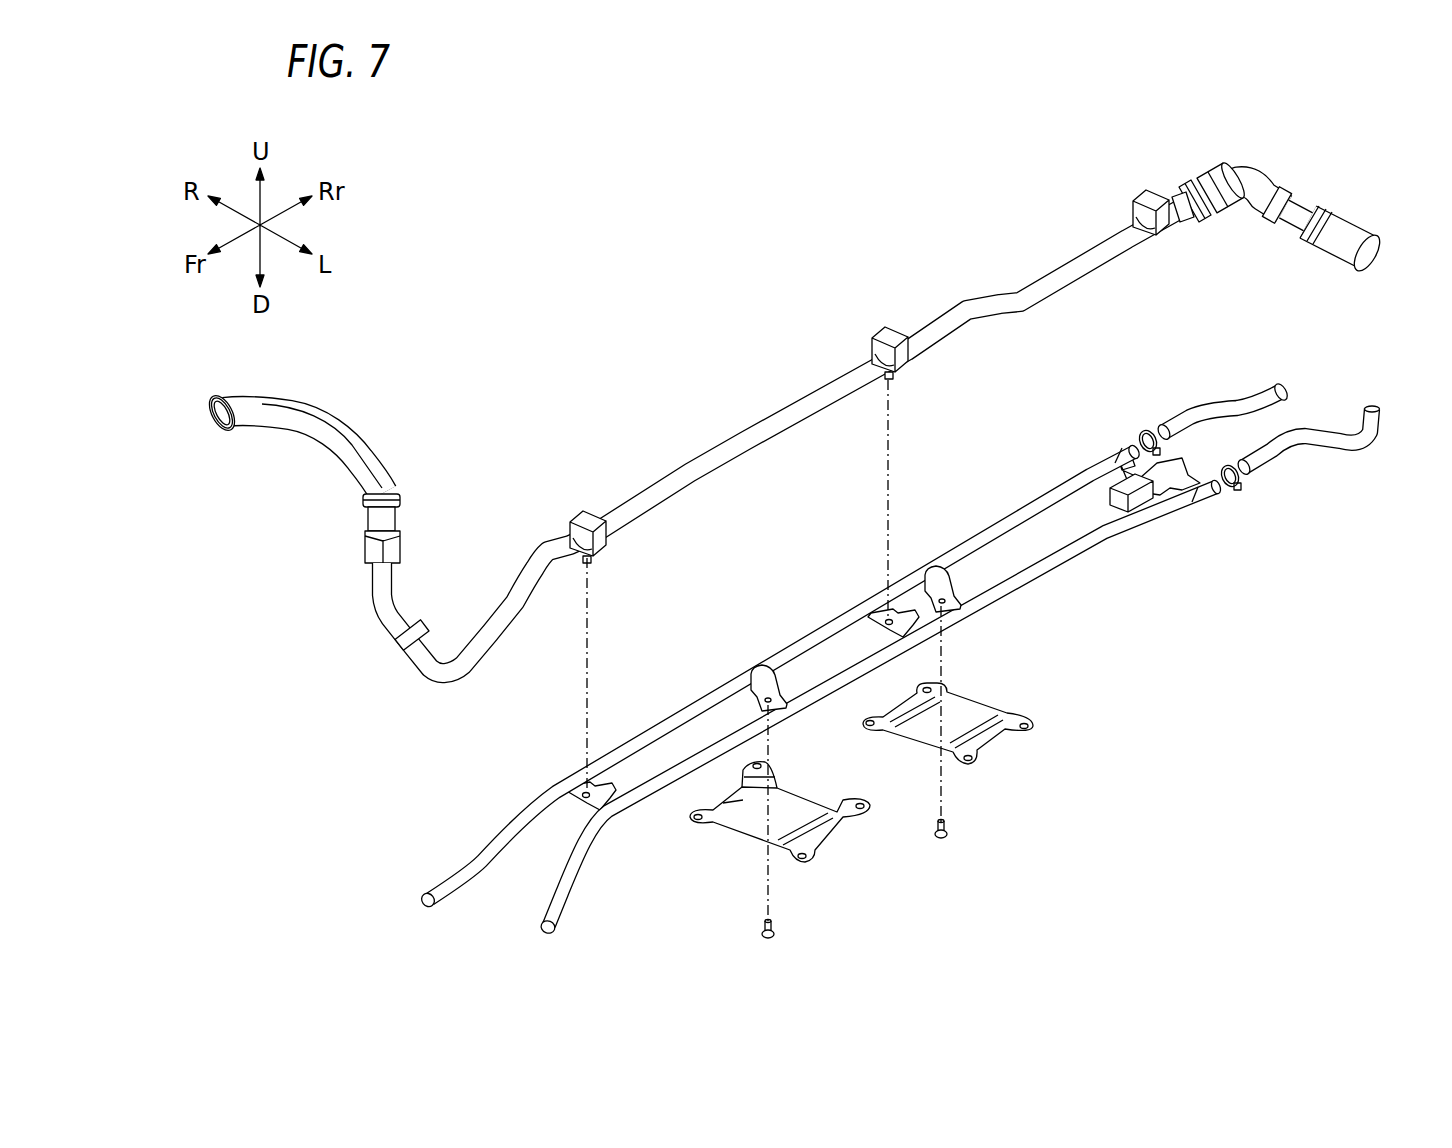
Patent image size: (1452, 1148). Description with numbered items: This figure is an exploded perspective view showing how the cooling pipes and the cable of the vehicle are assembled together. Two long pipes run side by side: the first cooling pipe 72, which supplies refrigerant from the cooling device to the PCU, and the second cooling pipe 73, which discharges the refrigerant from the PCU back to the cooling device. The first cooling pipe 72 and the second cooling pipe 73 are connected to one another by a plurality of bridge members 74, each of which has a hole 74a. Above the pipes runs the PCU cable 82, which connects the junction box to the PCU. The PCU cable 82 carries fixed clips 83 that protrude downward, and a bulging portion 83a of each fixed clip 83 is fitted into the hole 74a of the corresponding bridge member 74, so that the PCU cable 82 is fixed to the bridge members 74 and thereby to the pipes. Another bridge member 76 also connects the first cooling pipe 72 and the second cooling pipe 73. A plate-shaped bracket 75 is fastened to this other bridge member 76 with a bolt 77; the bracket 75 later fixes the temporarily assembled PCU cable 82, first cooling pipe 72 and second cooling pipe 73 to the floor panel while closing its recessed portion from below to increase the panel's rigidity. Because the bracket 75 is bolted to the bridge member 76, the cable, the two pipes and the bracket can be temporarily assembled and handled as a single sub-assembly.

The first cooling pipe 72 is at (1086, 549).
The second cooling pipe 73 is at (1024, 508).
The bridge member 74 is at (565, 805).
The hole 74a is at (583, 793).
The bracket 75 is at (832, 843).
The other bridge member 76 is at (756, 672).
The bolt 77 is at (777, 937).
The PCU cable 82 is at (780, 418).
The fixed clip 83 is at (604, 542).
The bulging portion 83a is at (585, 562).